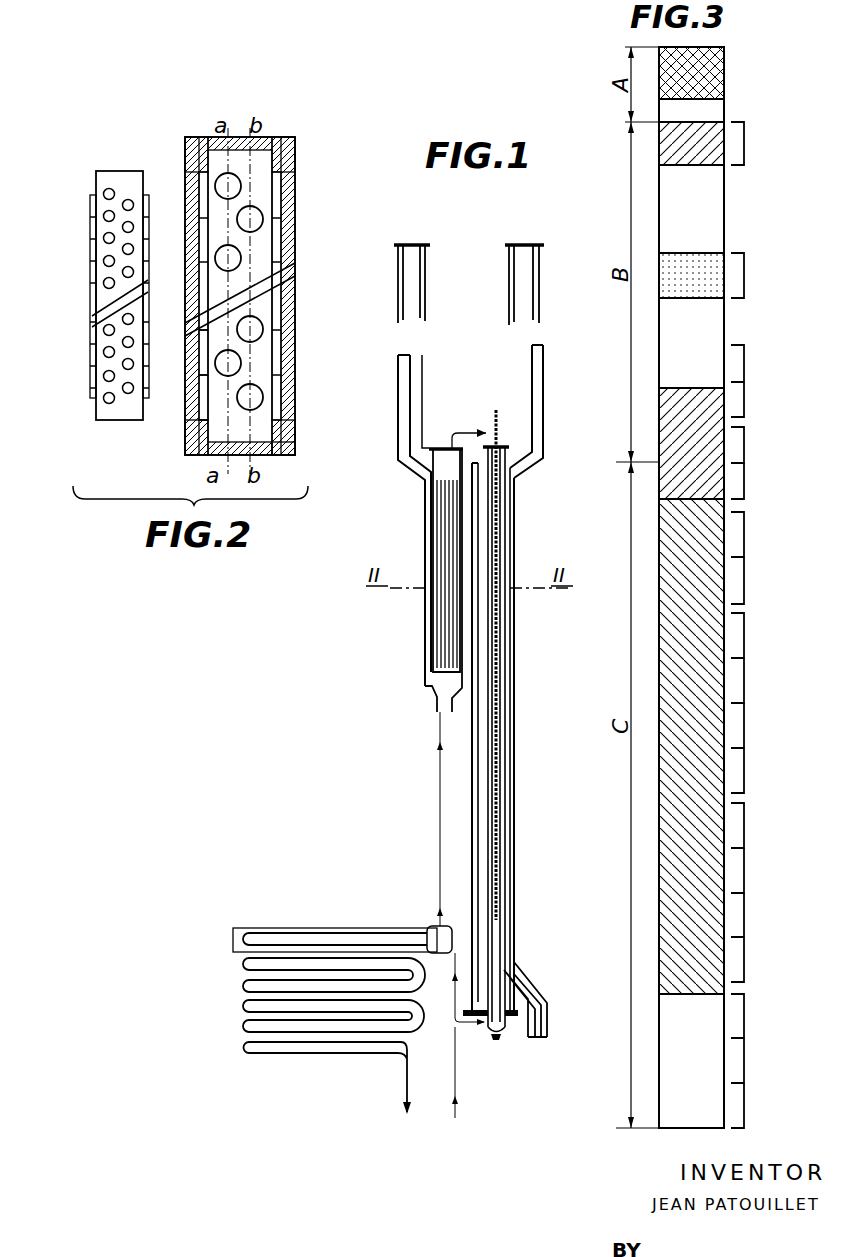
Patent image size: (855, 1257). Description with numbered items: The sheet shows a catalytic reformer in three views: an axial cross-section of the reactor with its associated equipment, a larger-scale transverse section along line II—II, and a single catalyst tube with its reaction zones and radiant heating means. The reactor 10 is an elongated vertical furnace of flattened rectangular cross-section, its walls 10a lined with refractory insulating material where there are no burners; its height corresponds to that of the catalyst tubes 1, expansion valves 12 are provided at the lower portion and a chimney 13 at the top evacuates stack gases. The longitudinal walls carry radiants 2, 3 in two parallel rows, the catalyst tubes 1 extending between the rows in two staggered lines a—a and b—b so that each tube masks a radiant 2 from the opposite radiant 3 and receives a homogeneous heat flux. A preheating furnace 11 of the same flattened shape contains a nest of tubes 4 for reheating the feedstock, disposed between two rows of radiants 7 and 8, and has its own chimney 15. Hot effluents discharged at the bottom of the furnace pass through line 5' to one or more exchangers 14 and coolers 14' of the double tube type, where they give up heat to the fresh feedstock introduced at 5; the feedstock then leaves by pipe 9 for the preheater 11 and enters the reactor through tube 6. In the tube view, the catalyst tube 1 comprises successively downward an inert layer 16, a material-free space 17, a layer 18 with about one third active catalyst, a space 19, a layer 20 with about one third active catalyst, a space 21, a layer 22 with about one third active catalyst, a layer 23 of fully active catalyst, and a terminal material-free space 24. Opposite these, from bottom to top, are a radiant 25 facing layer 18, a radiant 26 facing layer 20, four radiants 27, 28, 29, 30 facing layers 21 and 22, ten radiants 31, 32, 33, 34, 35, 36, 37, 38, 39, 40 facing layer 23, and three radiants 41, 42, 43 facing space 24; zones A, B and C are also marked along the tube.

In FIG. 2, the catalyst tube 1 is at (238, 260).
In FIG. 1, the catalyst tube 1 is at (493, 951).
In FIG. 3, the catalyst tube 1 is at (655, 611).
In FIG. 2, the radiant 2 is at (281, 362).
In FIG. 2, the radiant 3 is at (200, 393).
In FIG. 2, the tubes 4 is at (128, 394).
In FIG. 1, the tubes 4 is at (437, 652).
In FIG. 1, the feedstock inlet 5 is at (464, 1072).
In FIG. 1, the line 5' is at (453, 989).
In FIG. 1, the tube 6 is at (455, 433).
In FIG. 2, the radiant 7 is at (94, 240).
In FIG. 2, the radiant 8 is at (152, 232).
In FIG. 1, the pipe 9 is at (440, 846).
In FIG. 2, the reactor 10 is at (296, 190).
In FIG. 1, the reactor 10 is at (513, 707).
In FIG. 2, the walls of the furnace 10a is at (281, 444).
In FIG. 1, the walls of the furnace 10a is at (510, 799).
In FIG. 2, the preheating furnace 11 is at (87, 362).
In FIG. 1, the preheating furnace 11 is at (424, 609).
In FIG. 1, the expansion valves 12 is at (536, 1040).
In FIG. 1, the chimney 13 is at (532, 379).
In FIG. 1, the exchanger 14 is at (321, 942).
In FIG. 1, the coolers 14' is at (307, 1036).
In FIG. 1, the chimney 15 is at (421, 284).
In FIG. 3, the layer 16 is at (659, 75).
In FIG. 3, the material-free space 17 is at (659, 113).
In FIG. 3, the layer 18 is at (659, 143).
In FIG. 3, the material-free space 19 is at (659, 220).
In FIG. 3, the layer 20 is at (659, 278).
In FIG. 3, the material-free space 21 is at (659, 345).
In FIG. 3, the layer 22 is at (659, 435).
In FIG. 3, the layer 23 is at (659, 690).
In FIG. 3, the terminal material-free space 24 is at (659, 1070).
In FIG. 3, the radiant 25 is at (744, 144).
In FIG. 3, the radiant 26 is at (744, 276).
In FIG. 3, the radiant 27 is at (744, 364).
In FIG. 3, the radiant 28 is at (744, 400).
In FIG. 3, the radiant 29 is at (744, 445).
In FIG. 3, the radiant 30 is at (744, 481).
In FIG. 3, the radiant 31 is at (744, 535).
In FIG. 3, the radiant 32 is at (744, 581).
In FIG. 3, the radiant 33 is at (744, 636).
In FIG. 3, the radiant 34 is at (744, 681).
In FIG. 3, the radiant 35 is at (744, 726).
In FIG. 3, the radiant 36 is at (744, 771).
In FIG. 3, the radiant 37 is at (744, 826).
In FIG. 3, the radiant 38 is at (744, 871).
In FIG. 3, the radiant 39 is at (744, 915).
In FIG. 3, the radiant 40 is at (744, 960).
In FIG. 3, the radiant 41 is at (744, 1016).
In FIG. 3, the radiant 42 is at (744, 1061).
In FIG. 3, the radiant 43 is at (744, 1106).